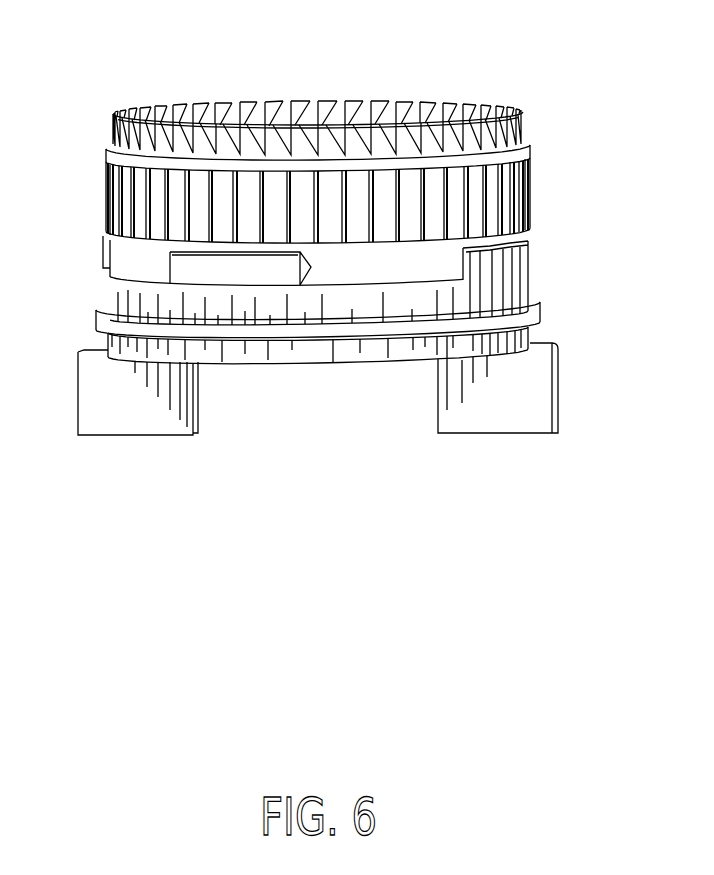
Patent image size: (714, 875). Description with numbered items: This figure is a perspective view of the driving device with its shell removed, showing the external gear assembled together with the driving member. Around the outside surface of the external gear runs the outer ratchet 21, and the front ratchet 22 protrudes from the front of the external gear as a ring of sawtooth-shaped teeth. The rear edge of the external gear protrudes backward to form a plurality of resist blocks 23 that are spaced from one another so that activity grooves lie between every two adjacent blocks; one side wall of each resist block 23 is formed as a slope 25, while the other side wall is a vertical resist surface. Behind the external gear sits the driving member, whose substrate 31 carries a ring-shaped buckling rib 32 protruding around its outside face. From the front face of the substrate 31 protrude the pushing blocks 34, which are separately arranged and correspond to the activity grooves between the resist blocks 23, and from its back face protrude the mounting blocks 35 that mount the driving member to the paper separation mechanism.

The outer ratchet 21 is at (523, 168).
The front ratchet 22 is at (275, 102).
The resist blocks 23 is at (408, 258).
The slope 25 is at (303, 258).
The substrate 31 is at (357, 362).
The buckling rib 32 is at (100, 322).
The pushing blocks 34 is at (227, 262).
The mounting blocks 35 is at (132, 422).